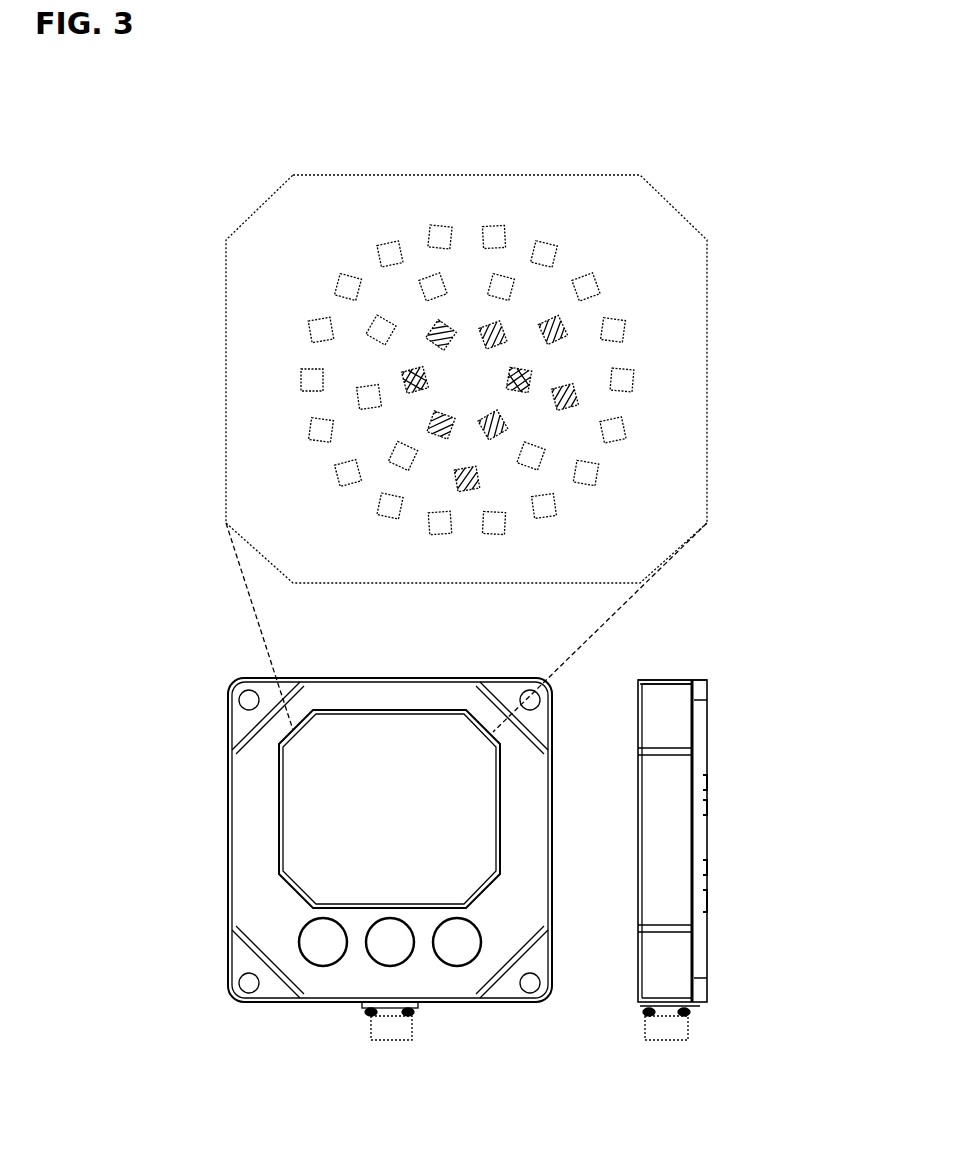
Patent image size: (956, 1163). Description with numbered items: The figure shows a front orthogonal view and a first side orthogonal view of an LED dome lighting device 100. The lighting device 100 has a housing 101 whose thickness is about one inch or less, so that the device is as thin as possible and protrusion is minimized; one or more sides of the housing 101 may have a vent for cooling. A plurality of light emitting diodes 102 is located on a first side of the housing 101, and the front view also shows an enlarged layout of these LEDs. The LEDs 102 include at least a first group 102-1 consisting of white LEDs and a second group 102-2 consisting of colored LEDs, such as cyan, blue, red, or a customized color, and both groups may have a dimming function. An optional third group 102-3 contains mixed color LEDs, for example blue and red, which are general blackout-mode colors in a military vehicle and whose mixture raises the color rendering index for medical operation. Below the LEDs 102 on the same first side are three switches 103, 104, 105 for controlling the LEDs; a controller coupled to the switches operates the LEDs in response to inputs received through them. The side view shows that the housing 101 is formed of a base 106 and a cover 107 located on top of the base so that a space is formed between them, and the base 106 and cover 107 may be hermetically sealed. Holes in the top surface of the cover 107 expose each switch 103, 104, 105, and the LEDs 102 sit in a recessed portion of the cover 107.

The lighting device 100 is at (479, 582).
The housing 101 is at (228, 838).
The plurality of light emitting diodes 102 is at (458, 176).
The first group of LEDs 102-1 is at (624, 331).
The second group of LEDs 102-2 is at (573, 393).
The third group of LEDs 102-3 is at (499, 331).
The switch 103 is at (457, 967).
The switch 104 is at (382, 968).
The switch 105 is at (305, 962).
The base 106 is at (709, 734).
The cover 107 is at (678, 680).